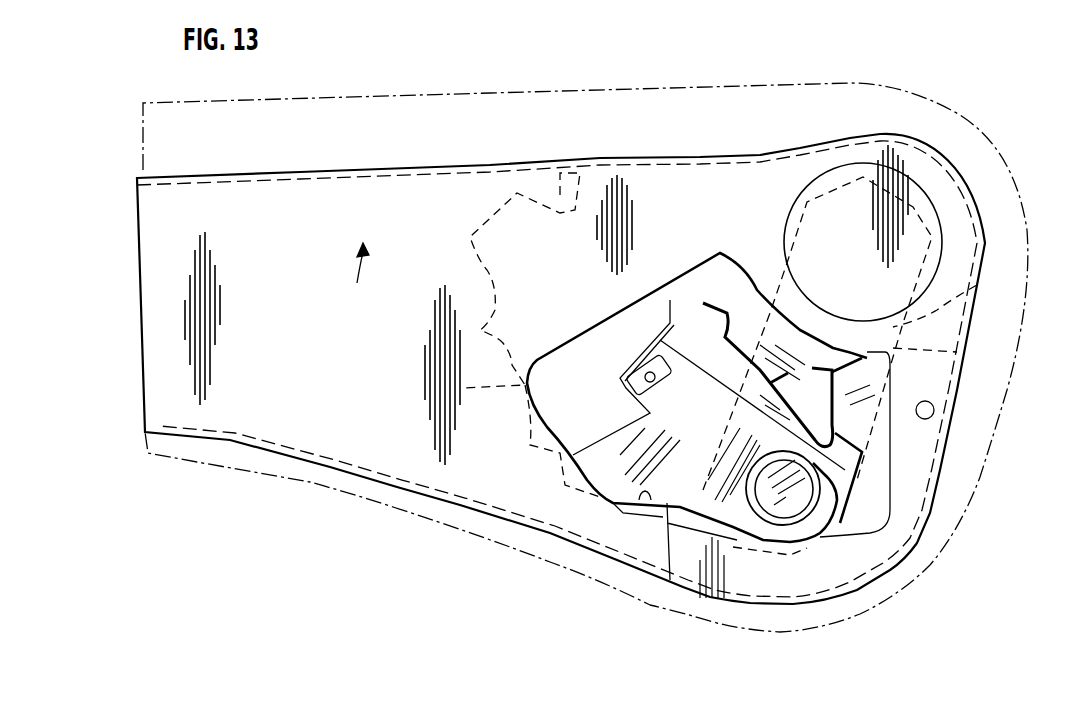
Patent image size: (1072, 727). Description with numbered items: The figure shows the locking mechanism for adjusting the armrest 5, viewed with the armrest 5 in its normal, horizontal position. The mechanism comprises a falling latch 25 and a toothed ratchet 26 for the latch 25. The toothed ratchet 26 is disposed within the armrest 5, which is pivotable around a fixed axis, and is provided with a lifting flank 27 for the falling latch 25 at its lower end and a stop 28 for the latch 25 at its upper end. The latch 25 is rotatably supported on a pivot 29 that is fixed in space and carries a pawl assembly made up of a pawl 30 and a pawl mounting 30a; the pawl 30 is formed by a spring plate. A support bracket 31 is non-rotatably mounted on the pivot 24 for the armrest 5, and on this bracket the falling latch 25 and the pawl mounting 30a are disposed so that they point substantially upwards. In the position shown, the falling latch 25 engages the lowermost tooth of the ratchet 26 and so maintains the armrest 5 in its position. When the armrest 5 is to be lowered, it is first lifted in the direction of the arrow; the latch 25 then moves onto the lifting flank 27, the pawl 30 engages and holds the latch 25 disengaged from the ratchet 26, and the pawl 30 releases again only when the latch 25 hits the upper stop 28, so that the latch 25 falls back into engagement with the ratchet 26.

The armrest 5 is at (415, 130).
The pivot 24 is at (920, 203).
The falling latch 25 is at (610, 463).
The toothed ratchet 26 is at (462, 388).
The lifting flank 27 is at (623, 513).
The stop 28 is at (560, 173).
The pivot 29 is at (797, 500).
The pawl 30 is at (670, 300).
The pawl mounting 30a is at (705, 300).
The support bracket 31 is at (977, 285).